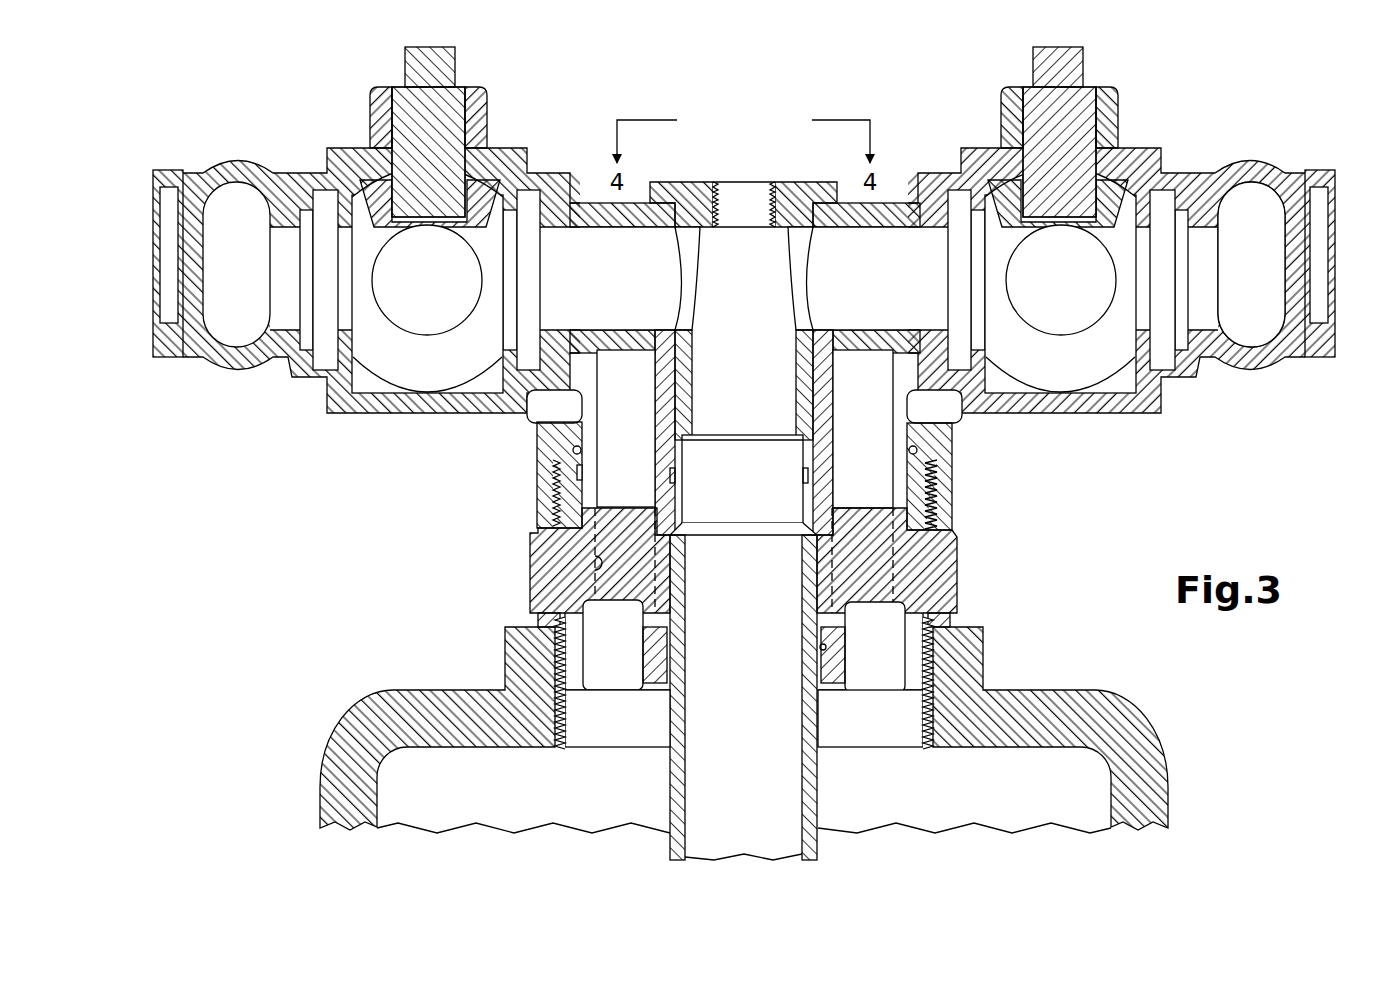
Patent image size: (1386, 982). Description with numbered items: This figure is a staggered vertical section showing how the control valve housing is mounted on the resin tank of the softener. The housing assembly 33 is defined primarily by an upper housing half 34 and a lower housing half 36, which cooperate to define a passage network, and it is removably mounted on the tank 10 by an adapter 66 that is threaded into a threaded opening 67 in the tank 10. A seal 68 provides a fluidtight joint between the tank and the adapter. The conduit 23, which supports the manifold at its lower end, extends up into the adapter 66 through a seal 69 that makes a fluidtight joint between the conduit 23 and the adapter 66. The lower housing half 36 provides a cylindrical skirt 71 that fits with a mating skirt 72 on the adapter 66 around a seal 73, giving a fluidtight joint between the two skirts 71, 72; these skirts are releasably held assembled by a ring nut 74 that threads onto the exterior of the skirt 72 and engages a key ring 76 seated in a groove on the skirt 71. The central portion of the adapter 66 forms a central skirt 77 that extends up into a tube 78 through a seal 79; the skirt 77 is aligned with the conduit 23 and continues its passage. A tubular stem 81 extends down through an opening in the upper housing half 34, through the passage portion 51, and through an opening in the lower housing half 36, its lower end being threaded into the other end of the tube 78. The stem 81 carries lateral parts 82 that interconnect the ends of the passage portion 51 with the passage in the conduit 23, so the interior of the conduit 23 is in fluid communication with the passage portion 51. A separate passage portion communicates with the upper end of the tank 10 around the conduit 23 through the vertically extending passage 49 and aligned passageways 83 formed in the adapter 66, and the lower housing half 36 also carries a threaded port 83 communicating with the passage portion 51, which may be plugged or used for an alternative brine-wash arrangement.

The tank 10 is at (1106, 693).
The conduit 23 is at (681, 703).
The housing assembly 33 is at (1040, 458).
The upper housing half 34 is at (1287, 167).
The lower housing half 36 is at (1262, 362).
The vertically extending passage 49 is at (613, 423).
The passage portion 51 is at (600, 296).
The adapter 66 is at (948, 575).
The threaded opening 67 is at (932, 727).
The seal 68 is at (960, 618).
The seal 69 is at (846, 650).
The cylindrical skirt 71 is at (913, 412).
The mating skirt 72 is at (925, 493).
The seal 73 is at (572, 473).
The ring nut 74 is at (520, 493).
The key ring 76 is at (572, 446).
The central skirt 77 is at (683, 458).
The tube 78 is at (823, 413).
The seal 79 is at (815, 482).
The tubular stem 81 is at (690, 377).
The lateral parts 82 is at (693, 278).
The passageways / threaded port 83 is at (715, 198).